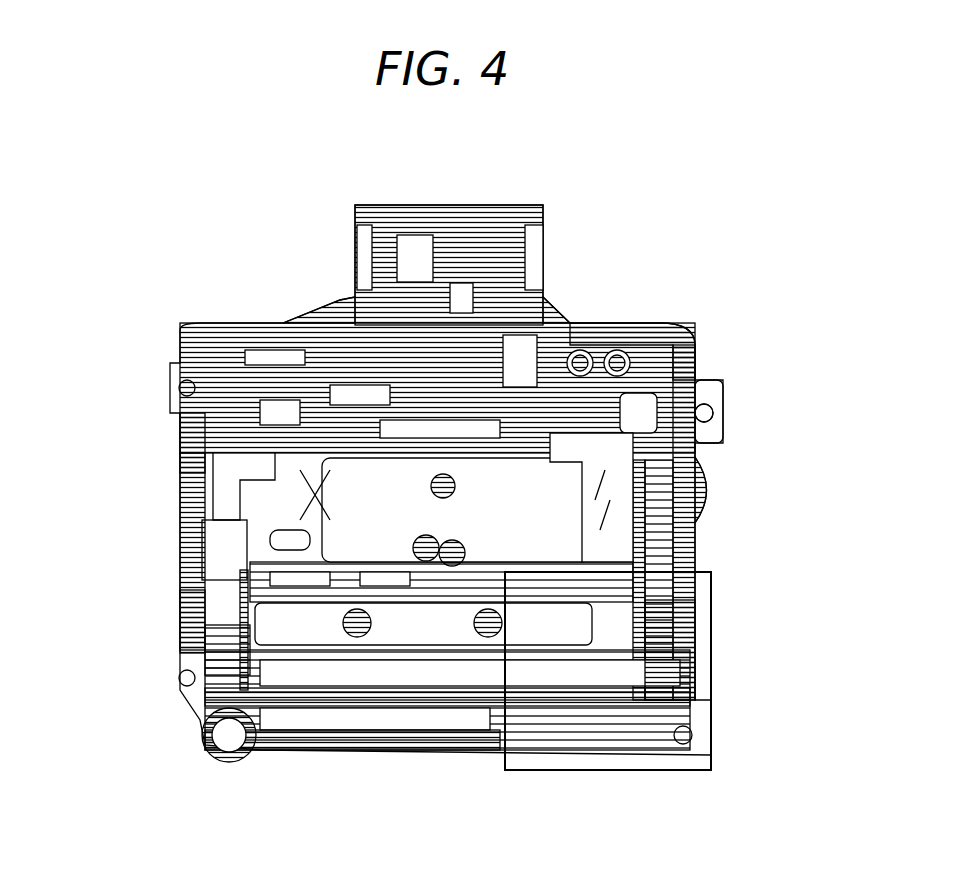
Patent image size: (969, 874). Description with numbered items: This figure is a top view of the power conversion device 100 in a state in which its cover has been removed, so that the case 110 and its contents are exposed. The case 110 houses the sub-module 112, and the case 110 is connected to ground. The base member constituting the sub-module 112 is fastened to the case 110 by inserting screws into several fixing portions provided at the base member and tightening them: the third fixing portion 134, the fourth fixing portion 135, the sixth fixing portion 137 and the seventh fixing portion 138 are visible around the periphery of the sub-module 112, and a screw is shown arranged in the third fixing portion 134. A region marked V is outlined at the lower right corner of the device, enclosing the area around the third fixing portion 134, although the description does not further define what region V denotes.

The power conversion device 100 is at (207, 247).
The case 110 is at (210, 750).
The sub-module 112 is at (705, 427).
The third fixing portion 134 is at (690, 660).
The fourth fixing portion 135 is at (695, 357).
The sixth fixing portion 137 is at (182, 622).
The seventh fixing portion 138 is at (183, 433).
The region V is at (710, 715).